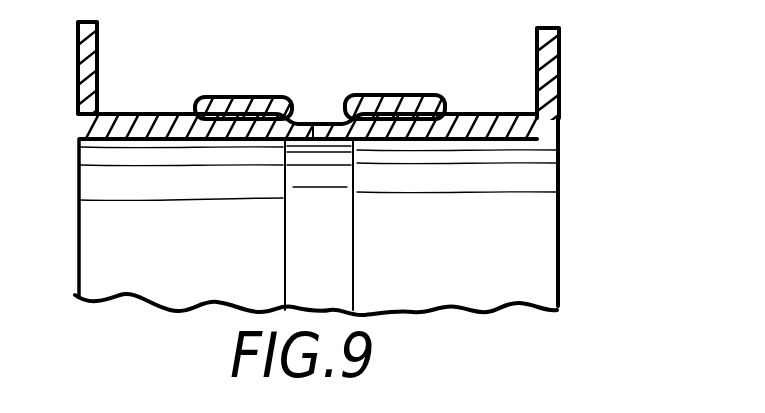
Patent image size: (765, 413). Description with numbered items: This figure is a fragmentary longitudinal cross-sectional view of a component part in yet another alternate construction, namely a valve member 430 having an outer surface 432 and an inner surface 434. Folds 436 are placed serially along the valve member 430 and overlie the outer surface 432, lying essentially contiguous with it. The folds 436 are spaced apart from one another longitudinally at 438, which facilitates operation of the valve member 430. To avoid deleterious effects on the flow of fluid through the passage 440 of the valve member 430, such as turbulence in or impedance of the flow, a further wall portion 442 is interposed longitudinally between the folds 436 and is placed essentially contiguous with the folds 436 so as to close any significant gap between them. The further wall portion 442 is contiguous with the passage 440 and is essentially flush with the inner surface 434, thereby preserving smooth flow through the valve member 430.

The valve member 430 is at (566, 97).
The outer surface 432 is at (470, 118).
The inner surface 434 is at (552, 177).
The folds 436 is at (198, 106).
The longitudinal spacing between folds 438 is at (312, 206).
The passage 440 is at (533, 252).
The further wall portion 442 is at (319, 224).